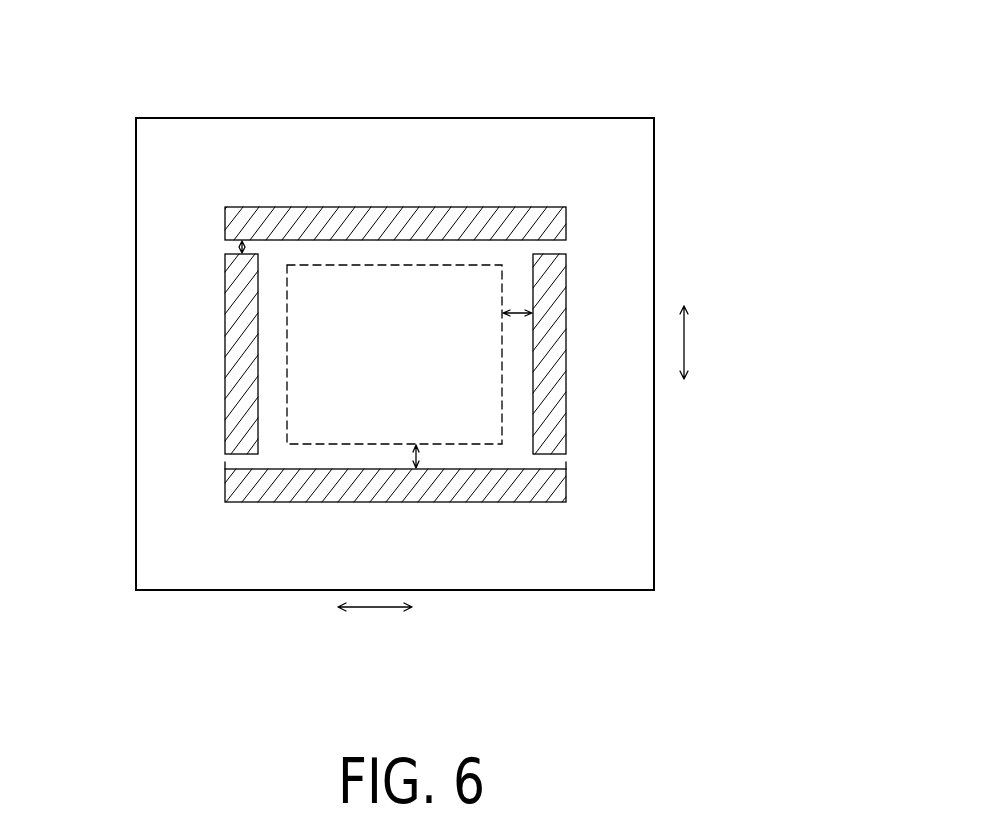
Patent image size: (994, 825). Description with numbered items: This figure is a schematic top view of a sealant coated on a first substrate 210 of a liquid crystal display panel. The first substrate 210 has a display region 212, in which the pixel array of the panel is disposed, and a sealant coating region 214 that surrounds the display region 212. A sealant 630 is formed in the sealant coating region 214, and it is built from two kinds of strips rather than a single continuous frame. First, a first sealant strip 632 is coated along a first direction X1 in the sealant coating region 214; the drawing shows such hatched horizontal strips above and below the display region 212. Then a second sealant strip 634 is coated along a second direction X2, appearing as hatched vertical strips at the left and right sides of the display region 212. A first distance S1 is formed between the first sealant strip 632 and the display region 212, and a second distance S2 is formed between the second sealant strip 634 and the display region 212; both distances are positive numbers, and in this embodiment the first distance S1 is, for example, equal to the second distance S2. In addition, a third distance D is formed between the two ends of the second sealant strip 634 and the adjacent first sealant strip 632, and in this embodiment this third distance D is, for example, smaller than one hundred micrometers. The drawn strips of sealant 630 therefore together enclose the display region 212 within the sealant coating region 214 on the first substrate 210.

The first substrate 210 is at (654, 152).
The display region 212 is at (352, 265).
The sealant coating region 214 is at (566, 242).
The sealant 630 is at (523, 355).
The first sealant strip 632 is at (553, 492).
The second sealant strip 634 is at (553, 423).
The third distance D is at (225, 243).
The first distance S1 is at (431, 458).
The second distance S2 is at (518, 326).
The first direction X1 is at (377, 607).
The second direction X2 is at (684, 340).